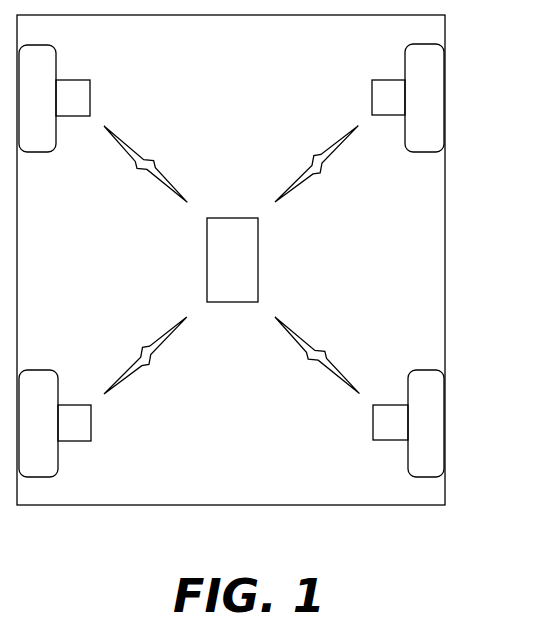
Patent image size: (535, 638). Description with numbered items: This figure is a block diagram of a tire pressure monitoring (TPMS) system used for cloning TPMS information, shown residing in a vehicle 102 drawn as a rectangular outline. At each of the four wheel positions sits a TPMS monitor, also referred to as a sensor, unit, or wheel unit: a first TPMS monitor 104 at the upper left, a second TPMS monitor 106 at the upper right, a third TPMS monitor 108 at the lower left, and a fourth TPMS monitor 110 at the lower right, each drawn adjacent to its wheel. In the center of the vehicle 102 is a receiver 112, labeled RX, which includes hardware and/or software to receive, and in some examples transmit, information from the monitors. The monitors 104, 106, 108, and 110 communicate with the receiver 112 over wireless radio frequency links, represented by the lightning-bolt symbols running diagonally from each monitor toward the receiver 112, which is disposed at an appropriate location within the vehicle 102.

The vehicle 102 is at (445, 253).
The first TPMS monitor 104 is at (90, 98).
The second TPMS monitor 106 is at (372, 98).
The third TPMS monitor 108 is at (91, 421).
The fourth TPMS monitor 110 is at (373, 422).
The receiver 112 is at (230, 218).